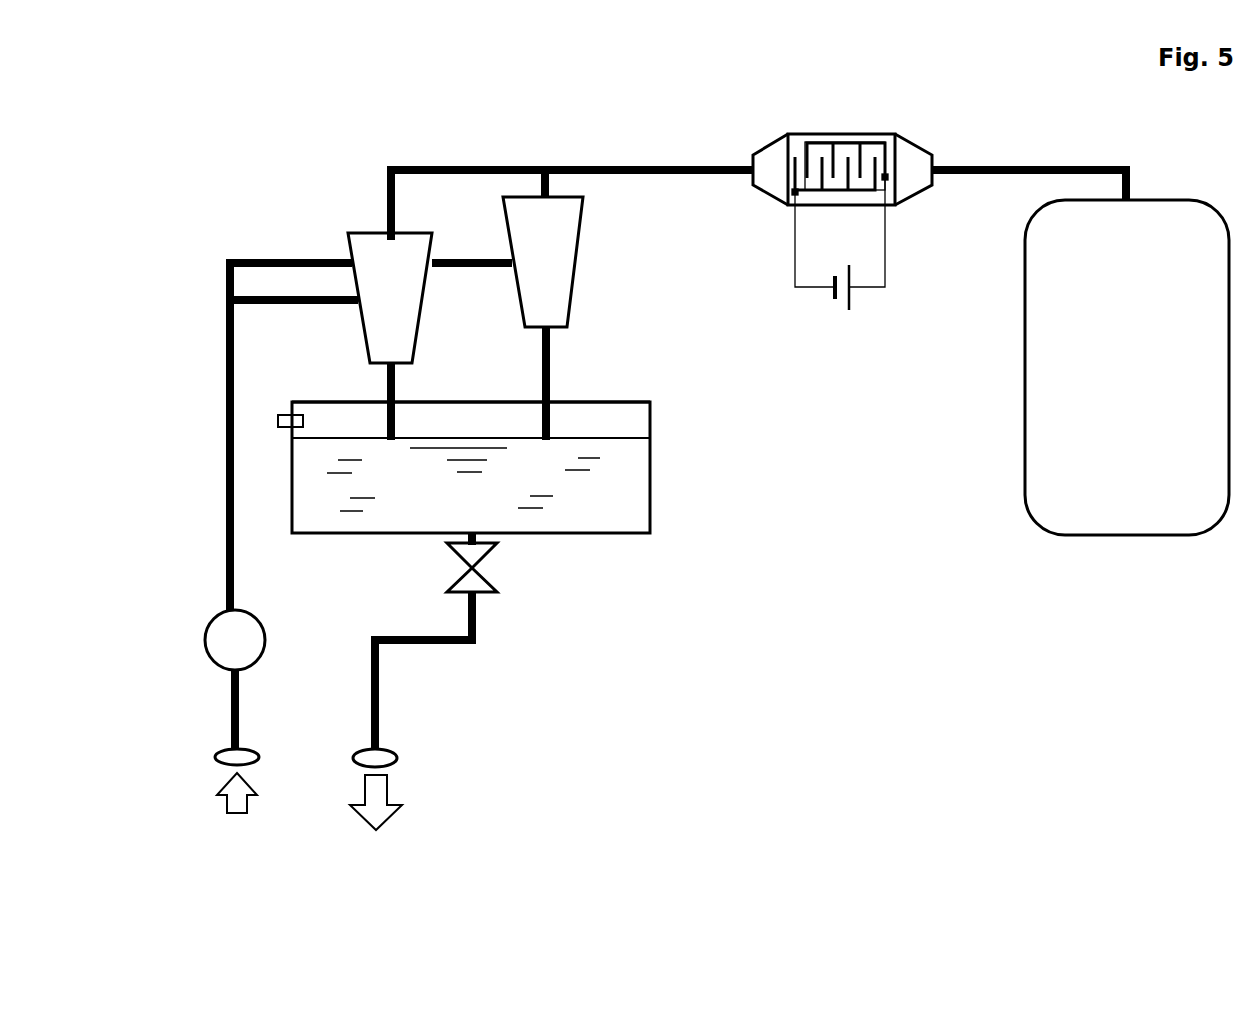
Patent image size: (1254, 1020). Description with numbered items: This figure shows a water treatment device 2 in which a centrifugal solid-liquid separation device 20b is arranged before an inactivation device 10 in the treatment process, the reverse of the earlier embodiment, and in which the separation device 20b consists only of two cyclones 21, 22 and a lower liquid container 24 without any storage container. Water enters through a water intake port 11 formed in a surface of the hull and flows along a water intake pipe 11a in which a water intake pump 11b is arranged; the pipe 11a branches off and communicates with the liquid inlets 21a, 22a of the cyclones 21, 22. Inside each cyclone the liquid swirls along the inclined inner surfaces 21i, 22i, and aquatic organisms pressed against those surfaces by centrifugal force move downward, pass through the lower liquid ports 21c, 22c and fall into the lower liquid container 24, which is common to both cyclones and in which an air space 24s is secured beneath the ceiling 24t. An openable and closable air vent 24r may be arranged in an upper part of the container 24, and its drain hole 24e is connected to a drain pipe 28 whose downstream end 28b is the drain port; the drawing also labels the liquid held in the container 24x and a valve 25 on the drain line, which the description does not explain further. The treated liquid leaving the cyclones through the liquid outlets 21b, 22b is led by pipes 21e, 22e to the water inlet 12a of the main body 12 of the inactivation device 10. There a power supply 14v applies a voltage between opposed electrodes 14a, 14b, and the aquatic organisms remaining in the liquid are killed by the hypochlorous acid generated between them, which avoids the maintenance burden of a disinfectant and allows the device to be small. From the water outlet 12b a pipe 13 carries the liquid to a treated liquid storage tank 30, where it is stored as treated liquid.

The water treatment device 2 is at (847, 600).
The inactivation device 10 is at (830, 216).
The water intake port 11 is at (215, 757).
The water intake pipe 11a is at (230, 562).
The water intake pump 11b is at (205, 640).
The main body 12 is at (790, 135).
The water inlet 12a is at (753, 165).
The water outlet 12b is at (935, 165).
The pipe 13 is at (1048, 165).
The electrode 14a is at (830, 142).
The electrode 14b is at (791, 193).
The power supply 14v is at (852, 300).
The centrifugal solid-liquid separation device 20b is at (258, 144).
The cyclone 21 is at (390, 298).
The liquid inlet 21a is at (352, 302).
The liquid outlet 21b is at (386, 230).
The lower liquid port 21c is at (400, 370).
The pipe 21e is at (418, 168).
The inclined inner surface 21i is at (402, 300).
The cyclone 22 is at (543, 262).
The liquid inlet 22a is at (510, 268).
The liquid outlet 22b is at (540, 186).
The lower liquid port 22c is at (565, 332).
The pipe 22e is at (548, 182).
The inclined inner surface 22i is at (585, 292).
The lower liquid container 24 is at (547, 477).
The drain hole 24e is at (470, 533).
The air vent 24r is at (285, 415).
The air space 24s is at (597, 427).
The ceiling 24t is at (617, 400).
The liquid 24x is at (597, 427).
The drain valve 25 is at (493, 580).
The drain pipe 28 is at (428, 645).
The downstream end 28b is at (400, 757).
The treated liquid storage tank 30 is at (1127, 367).